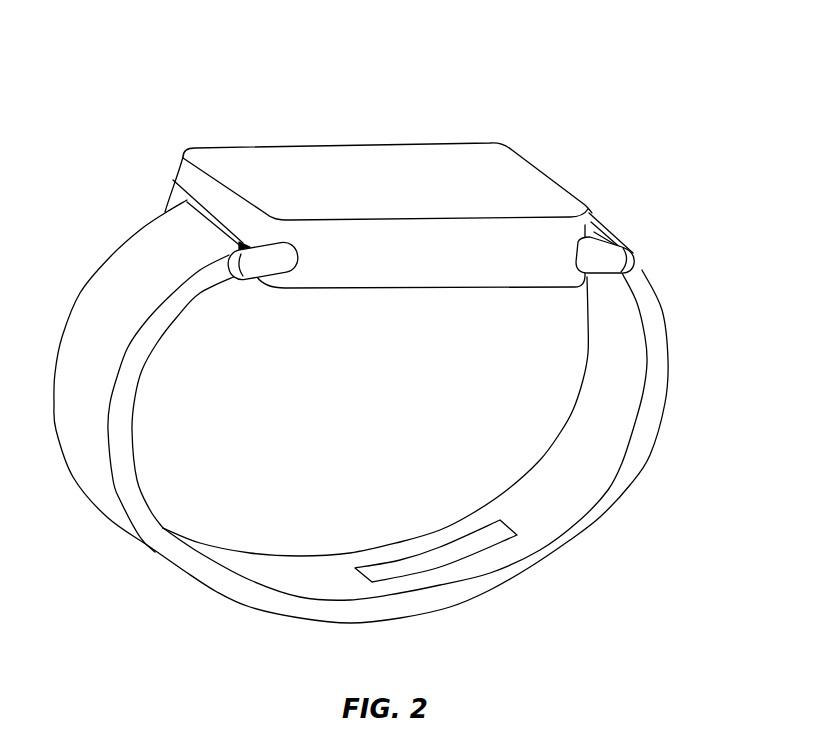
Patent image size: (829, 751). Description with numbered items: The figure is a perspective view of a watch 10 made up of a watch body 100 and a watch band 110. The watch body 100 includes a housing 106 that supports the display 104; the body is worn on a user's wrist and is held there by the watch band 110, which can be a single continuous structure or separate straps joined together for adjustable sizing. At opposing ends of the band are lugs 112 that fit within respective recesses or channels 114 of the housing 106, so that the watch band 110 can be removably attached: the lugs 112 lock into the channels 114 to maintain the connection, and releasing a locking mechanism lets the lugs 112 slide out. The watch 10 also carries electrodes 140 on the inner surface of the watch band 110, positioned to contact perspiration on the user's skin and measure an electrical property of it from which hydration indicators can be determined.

The watch 10 is at (397, 363).
The watch body 100 is at (344, 189).
The display 104 is at (502, 163).
The housing 106 is at (593, 212).
The watch band 110 is at (397, 429).
The lugs 112 is at (253, 268).
The channels 114 is at (303, 266).
The electrodes 140 is at (460, 553).